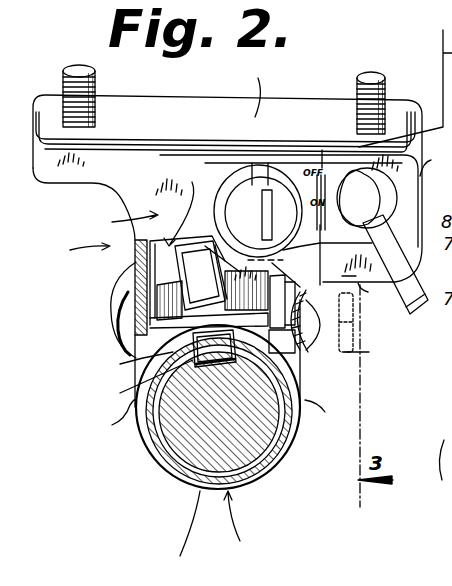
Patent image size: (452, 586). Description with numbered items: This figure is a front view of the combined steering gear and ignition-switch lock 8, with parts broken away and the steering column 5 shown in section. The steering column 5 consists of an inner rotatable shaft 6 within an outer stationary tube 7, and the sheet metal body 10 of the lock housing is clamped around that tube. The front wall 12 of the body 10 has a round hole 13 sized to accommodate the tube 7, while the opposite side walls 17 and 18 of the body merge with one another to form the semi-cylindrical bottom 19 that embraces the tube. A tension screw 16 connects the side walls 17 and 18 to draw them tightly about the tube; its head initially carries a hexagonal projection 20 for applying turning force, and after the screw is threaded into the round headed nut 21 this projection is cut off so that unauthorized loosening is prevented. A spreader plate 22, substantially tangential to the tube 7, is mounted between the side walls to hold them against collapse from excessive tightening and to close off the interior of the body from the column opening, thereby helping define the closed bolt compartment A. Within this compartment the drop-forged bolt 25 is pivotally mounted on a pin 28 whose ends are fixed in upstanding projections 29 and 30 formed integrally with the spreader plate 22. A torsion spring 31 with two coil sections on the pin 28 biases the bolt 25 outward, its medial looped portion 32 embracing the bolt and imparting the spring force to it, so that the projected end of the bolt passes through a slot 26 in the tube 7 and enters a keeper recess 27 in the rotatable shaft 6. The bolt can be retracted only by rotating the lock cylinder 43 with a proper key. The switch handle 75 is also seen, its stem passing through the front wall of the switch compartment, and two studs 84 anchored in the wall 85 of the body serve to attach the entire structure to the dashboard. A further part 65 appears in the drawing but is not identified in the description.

The steering column 5 is at (239, 521).
The inner rotatable shaft 6 is at (202, 445).
The outer stationary tube 7 is at (286, 447).
The combined steering gear and ignition-switch lock 8 is at (82, 248).
The body 10 is at (75, 184).
The front wall 12 is at (125, 221).
The round hole 13 is at (167, 453).
The tension screw 16 is at (345, 330).
The side wall 17 is at (112, 418).
The side wall 18 is at (306, 286).
The semi-cylindrical bottom 19 is at (191, 531).
The hexagonal projection 20 is at (368, 358).
The round headed nut 21 is at (119, 309).
The spreader plate 22 is at (282, 341).
The bolt 25 is at (214, 348).
The slot 26 is at (136, 365).
The keeper recess 27 is at (145, 383).
The pin 28 is at (337, 275).
The upstanding projection 29 is at (301, 346).
The upstanding projection 30 is at (140, 280).
The torsion spring 31 is at (216, 291).
The medial looped portion 32 is at (214, 238).
The lock cylinder 43 is at (252, 185).
The switch slot 65 is at (268, 185).
The switch handle 75 is at (408, 312).
The studs 84 is at (98, 86).
The wall 85 is at (243, 91).
The closed bolt compartment A is at (179, 207).